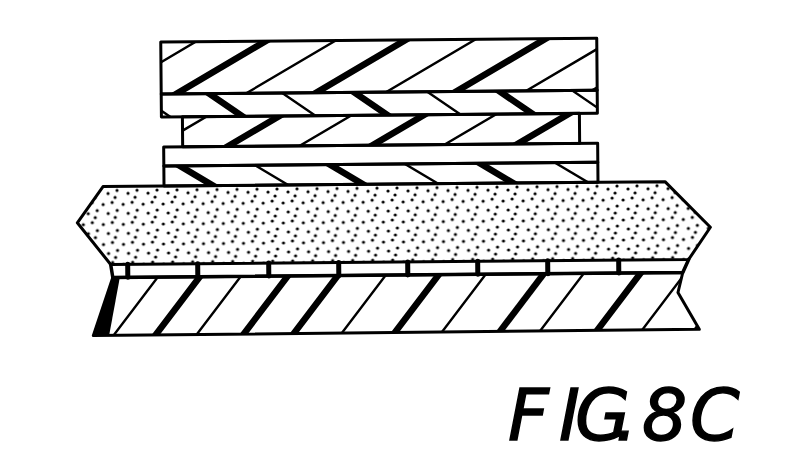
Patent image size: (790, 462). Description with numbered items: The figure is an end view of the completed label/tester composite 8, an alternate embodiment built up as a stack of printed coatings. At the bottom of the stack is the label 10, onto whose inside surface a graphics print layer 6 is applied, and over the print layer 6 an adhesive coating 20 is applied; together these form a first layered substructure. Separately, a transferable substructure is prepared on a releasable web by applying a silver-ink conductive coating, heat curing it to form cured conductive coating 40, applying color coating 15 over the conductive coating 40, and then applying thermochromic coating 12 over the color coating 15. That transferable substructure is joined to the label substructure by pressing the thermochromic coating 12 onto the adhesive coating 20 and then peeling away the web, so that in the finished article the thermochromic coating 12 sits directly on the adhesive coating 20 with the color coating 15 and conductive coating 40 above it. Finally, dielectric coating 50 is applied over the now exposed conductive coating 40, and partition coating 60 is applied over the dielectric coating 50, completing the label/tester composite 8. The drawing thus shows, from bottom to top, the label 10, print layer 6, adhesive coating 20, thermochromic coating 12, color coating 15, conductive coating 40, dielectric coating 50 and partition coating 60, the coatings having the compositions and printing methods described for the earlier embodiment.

The partition coating 60 is at (162, 70).
The dielectric coating 50 is at (163, 101).
The conductive coating 40 is at (183, 132).
The color coating 15 is at (164, 159).
The thermochromic coating 12 is at (164, 176).
The adhesive coating 20 is at (84, 211).
The graphics print layer 6 is at (115, 272).
The label 10 is at (103, 308).
The label/tester composite 8 is at (263, 348).